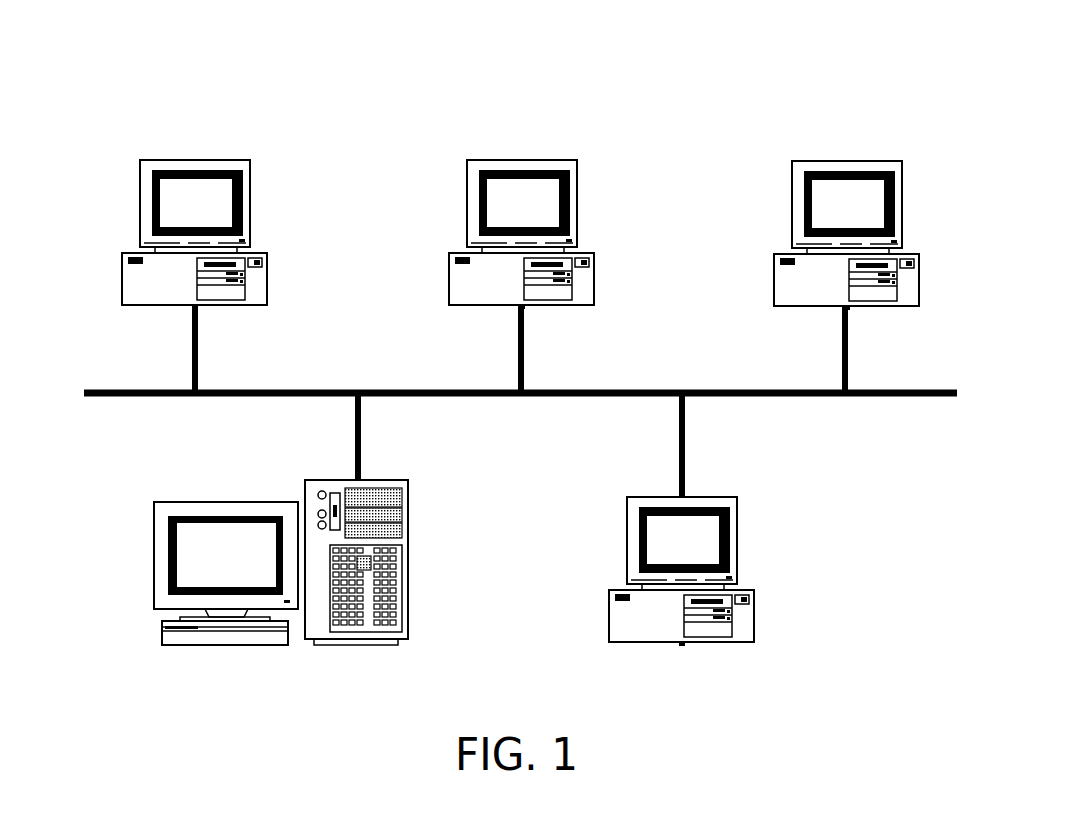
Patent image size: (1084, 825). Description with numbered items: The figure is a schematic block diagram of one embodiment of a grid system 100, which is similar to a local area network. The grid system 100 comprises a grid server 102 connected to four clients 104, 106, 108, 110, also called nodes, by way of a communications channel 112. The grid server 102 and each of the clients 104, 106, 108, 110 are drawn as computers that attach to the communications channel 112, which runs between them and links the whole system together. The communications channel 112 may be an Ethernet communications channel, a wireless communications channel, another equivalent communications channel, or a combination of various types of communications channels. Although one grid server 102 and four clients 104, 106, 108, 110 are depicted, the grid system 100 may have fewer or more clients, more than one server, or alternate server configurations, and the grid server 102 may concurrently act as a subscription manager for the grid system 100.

The grid system 100 is at (826, 85).
The grid server 102 is at (408, 537).
The client 104 is at (627, 537).
The client 106 is at (140, 200).
The client 108 is at (467, 200).
The client 110 is at (792, 201).
The communications channel 112 is at (878, 397).